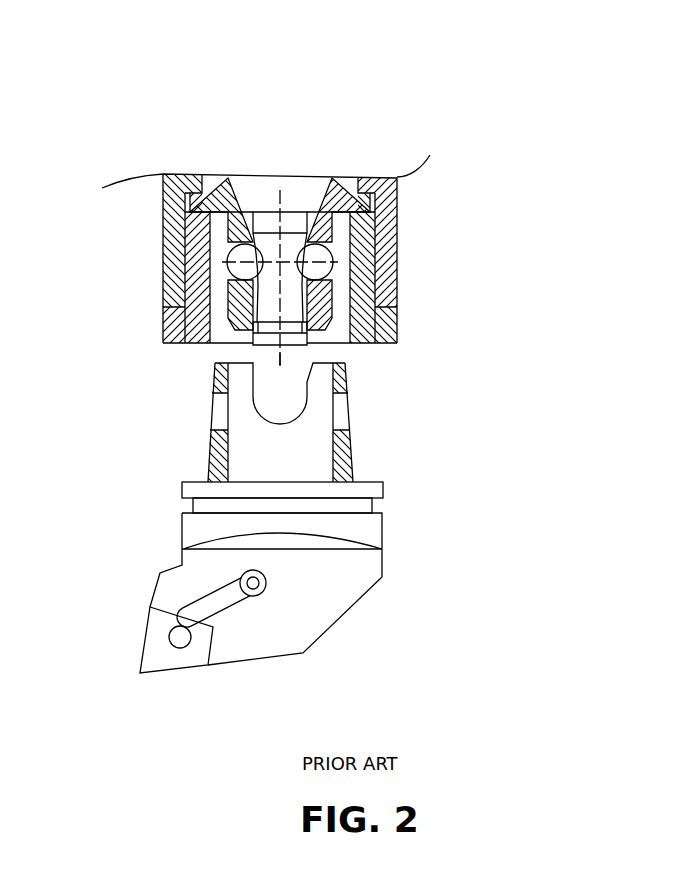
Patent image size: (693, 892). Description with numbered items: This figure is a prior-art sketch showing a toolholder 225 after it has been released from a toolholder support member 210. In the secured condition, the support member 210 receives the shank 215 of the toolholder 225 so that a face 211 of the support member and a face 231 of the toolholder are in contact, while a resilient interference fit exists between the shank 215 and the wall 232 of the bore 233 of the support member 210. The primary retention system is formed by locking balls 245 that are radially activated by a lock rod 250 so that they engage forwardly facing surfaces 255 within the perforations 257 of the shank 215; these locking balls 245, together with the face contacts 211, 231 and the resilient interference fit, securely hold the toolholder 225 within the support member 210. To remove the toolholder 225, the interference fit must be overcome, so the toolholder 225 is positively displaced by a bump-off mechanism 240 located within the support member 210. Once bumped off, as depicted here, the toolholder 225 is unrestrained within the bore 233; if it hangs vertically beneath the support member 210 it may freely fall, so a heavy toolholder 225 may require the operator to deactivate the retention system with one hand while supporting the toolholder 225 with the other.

The toolholder support member 210 is at (397, 250).
The face 211 is at (360, 482).
The shank 215 is at (353, 450).
The toolholder 225 is at (363, 597).
The face 231 is at (392, 353).
The wall 232 is at (223, 342).
The bore 233 is at (227, 340).
The bump-off mechanism 240 is at (298, 347).
The locking balls 245 is at (397, 205).
The lock rod 250 is at (292, 300).
The forwardly facing surfaces 255 is at (326, 243).
The perforations 257 is at (397, 270).